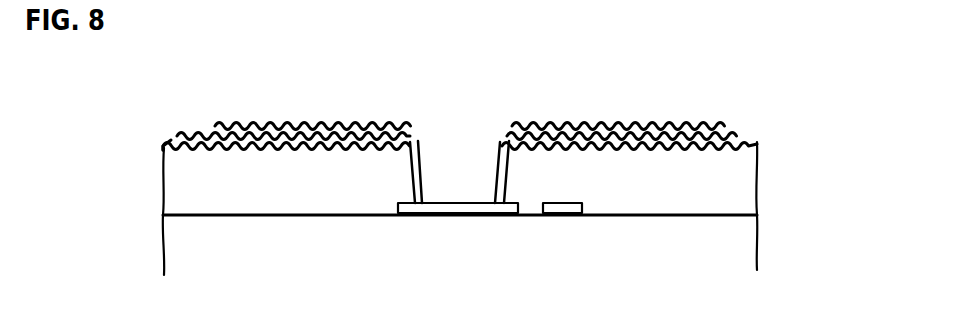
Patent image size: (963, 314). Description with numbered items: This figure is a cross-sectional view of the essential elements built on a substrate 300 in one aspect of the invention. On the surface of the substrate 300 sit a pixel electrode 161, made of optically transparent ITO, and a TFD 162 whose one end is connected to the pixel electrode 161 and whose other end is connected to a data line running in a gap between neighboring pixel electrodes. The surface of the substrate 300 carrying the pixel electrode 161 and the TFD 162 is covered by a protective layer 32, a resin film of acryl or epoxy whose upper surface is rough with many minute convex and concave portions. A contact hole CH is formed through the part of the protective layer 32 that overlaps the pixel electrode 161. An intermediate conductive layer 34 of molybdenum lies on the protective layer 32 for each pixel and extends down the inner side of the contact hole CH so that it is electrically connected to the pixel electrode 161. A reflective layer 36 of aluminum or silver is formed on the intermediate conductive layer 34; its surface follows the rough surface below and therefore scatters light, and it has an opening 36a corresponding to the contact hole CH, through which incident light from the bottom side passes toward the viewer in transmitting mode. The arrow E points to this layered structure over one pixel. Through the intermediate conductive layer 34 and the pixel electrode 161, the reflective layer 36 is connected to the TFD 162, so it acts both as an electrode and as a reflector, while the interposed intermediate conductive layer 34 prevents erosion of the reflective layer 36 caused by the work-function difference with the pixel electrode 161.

The light emitting element region E is at (162, 111).
The contact hole CH is at (422, 170).
The protective layer 32 is at (760, 170).
The intermediate conductive layer 34 is at (735, 133).
The reflective layer 36 is at (613, 123).
The opening 36a is at (503, 140).
The pixel electrode 161 is at (453, 214).
The TFD 162 is at (567, 214).
The substrate 300 is at (762, 236).